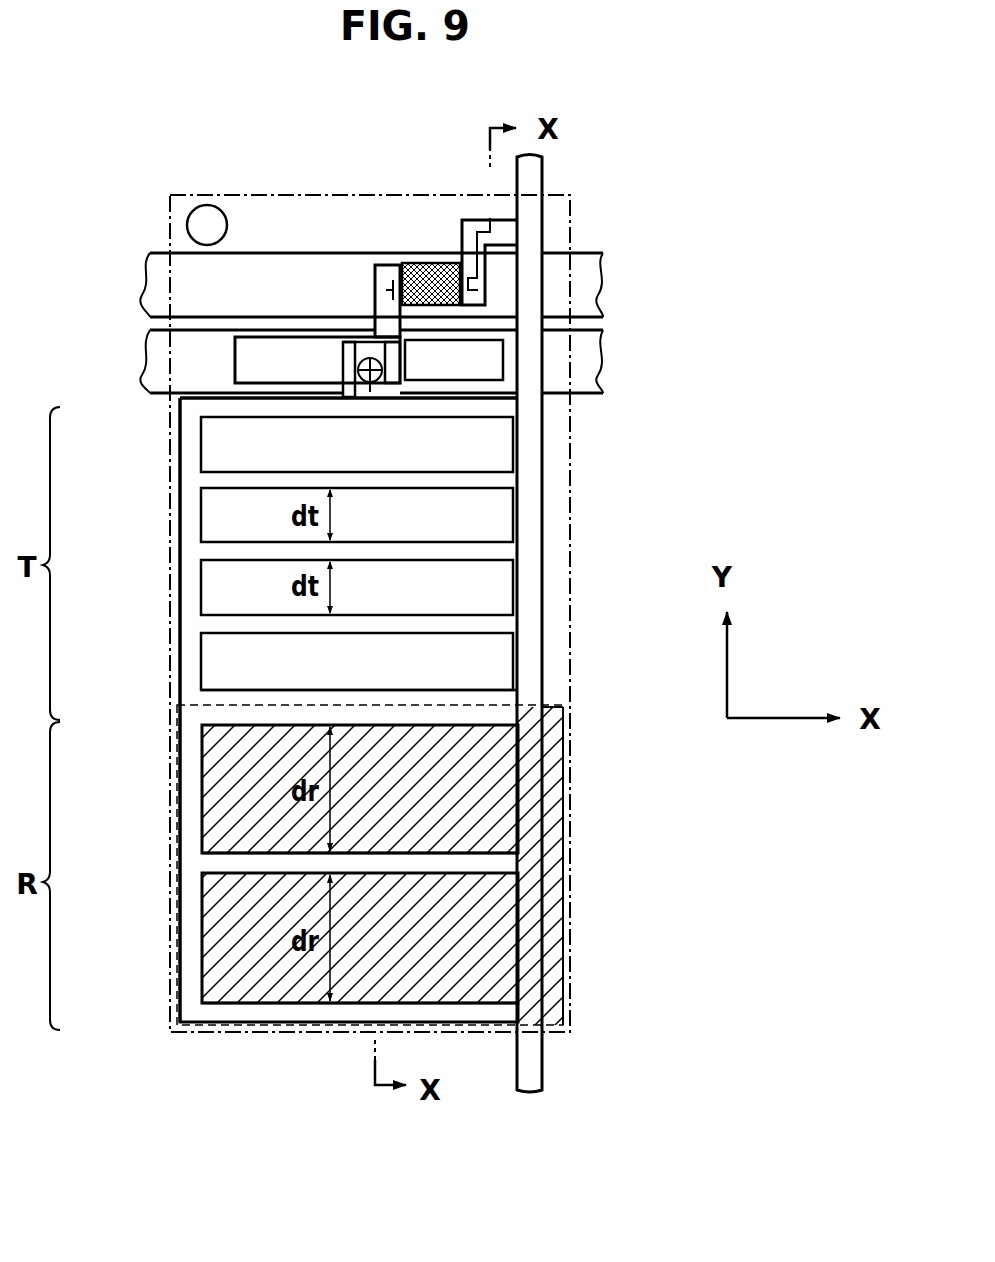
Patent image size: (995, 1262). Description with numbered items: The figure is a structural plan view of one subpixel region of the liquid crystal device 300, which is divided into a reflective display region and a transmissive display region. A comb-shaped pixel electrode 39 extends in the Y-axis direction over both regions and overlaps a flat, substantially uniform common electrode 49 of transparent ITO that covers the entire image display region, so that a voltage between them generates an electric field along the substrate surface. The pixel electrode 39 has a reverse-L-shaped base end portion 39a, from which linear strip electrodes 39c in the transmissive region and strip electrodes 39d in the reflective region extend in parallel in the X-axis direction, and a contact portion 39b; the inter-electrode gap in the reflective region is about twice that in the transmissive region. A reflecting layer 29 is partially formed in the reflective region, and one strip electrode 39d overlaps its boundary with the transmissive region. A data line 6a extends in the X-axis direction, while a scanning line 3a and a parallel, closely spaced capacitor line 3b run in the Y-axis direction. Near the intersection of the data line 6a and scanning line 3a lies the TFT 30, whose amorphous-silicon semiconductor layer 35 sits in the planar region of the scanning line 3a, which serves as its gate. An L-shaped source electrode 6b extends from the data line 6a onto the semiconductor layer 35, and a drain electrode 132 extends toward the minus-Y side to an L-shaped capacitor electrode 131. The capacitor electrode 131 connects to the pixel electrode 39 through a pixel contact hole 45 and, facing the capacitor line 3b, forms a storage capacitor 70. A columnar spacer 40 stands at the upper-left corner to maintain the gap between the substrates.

The liquid crystal device 300 is at (608, 182).
The TFT 30 is at (403, 232).
The source electrode 6b is at (467, 222).
The data line 6a is at (545, 1078).
The semiconductor layer 35 is at (445, 263).
The columnar spacer 40 is at (206, 208).
The drain electrode 132 is at (392, 268).
The capacitor electrode 131 is at (245, 358).
The scanning line 3a is at (150, 252).
The capacitor line 3b is at (152, 392).
The storage capacitor 70 is at (232, 375).
The pixel contact hole 45 is at (355, 366).
The pixel electrode 39 is at (178, 600).
The base end portion 39a is at (290, 415).
The contact portion 39b is at (383, 393).
The strip electrodes 39c is at (505, 480).
The strip electrodes 39d is at (510, 697).
The reflecting layer 29 is at (513, 760).
The common electrode 49 is at (575, 520).